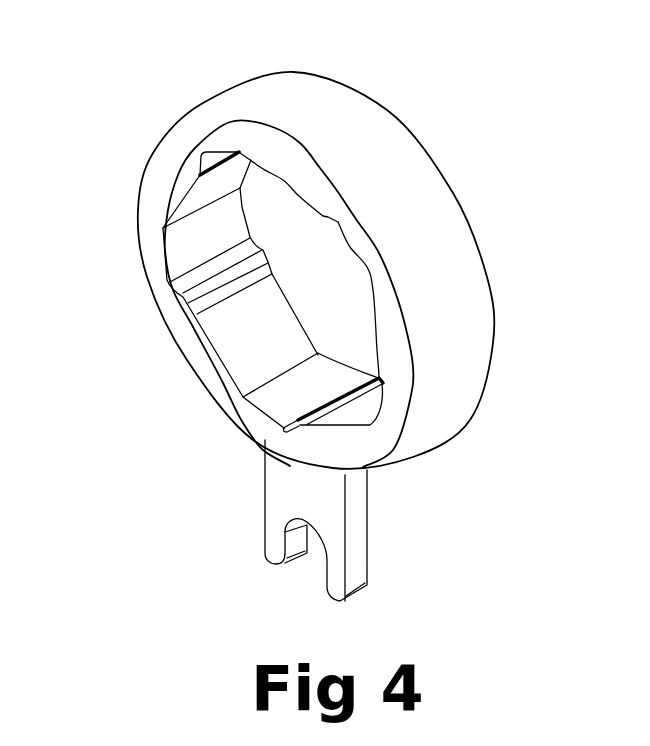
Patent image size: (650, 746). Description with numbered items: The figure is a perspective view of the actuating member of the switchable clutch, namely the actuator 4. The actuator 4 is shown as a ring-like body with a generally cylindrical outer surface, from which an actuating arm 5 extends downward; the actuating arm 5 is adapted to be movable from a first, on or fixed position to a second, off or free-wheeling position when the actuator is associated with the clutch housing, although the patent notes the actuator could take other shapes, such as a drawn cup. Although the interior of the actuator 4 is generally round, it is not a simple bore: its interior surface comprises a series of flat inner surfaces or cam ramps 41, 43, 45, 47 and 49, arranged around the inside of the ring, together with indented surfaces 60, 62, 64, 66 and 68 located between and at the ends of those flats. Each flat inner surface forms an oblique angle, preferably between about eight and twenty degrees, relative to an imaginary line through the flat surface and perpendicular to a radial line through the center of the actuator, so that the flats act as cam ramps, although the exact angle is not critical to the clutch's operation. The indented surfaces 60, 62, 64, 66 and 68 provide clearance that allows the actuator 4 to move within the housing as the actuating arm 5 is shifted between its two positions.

The actuator 4 is at (447, 182).
The actuating arm 5 is at (368, 533).
The flat inner surface or cam ramp 41 is at (282, 178).
The flat inner surface or cam ramp 43 is at (375, 308).
The flat inner surface or cam ramp 45 is at (348, 428).
The flat inner surface or cam ramp 47 is at (232, 347).
The flat inner surface or cam ramp 49 is at (180, 197).
The indented surface 60 is at (340, 223).
The indented surface 62 is at (388, 392).
The indented surface 64 is at (284, 428).
The indented surface 66 is at (173, 292).
The indented surface 68 is at (219, 151).